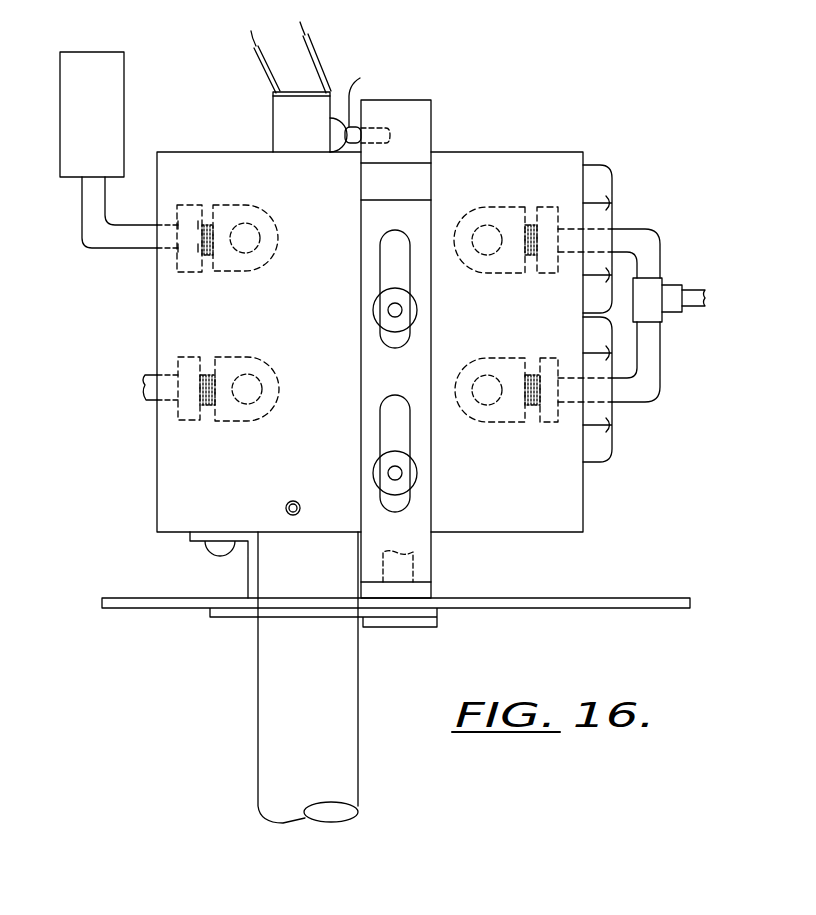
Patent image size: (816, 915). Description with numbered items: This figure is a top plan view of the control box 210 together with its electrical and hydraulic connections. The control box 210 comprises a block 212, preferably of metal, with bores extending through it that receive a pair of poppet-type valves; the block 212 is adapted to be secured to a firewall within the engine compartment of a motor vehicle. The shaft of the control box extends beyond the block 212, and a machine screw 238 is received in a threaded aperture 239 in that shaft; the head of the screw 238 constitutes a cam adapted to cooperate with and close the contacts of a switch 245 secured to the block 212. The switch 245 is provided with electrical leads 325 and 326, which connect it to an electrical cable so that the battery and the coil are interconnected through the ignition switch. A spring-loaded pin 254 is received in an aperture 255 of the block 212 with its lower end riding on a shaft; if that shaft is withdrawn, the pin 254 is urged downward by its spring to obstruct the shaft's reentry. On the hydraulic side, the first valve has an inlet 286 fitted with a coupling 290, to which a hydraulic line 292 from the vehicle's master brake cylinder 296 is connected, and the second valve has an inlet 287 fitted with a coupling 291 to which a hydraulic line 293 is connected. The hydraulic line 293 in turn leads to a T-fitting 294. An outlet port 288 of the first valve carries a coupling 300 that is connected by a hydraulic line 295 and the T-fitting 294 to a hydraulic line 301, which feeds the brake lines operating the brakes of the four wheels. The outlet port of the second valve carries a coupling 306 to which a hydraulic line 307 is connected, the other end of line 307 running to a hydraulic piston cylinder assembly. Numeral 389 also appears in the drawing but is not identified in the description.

The control box 210 is at (396, 461).
The block 212 is at (503, 502).
The master brake cylinder 296 is at (100, 97).
The hydraulic line 292 is at (152, 253).
The switch 245 is at (321, 108).
The electrical lead 325 is at (262, 70).
The electrical lead 326 is at (318, 58).
The machine screw 238 is at (361, 108).
The threaded aperture 239 is at (393, 128).
The inlet 286 is at (251, 228).
The coupling 290 is at (225, 205).
The pivot pin 389 is at (254, 382).
The coupling 306 is at (238, 358).
The hydraulic line 307 is at (148, 375).
The outlet port 288 is at (476, 213).
The coupling 300 is at (505, 207).
The inlet 287 is at (480, 380).
The coupling 291 is at (503, 358).
The hydraulic line 295 is at (622, 229).
The hydraulic line 293 is at (631, 392).
The T-fitting 294 is at (667, 312).
The hydraulic line 301 is at (695, 292).
The spring-loaded pin 254 is at (308, 482).
The aperture 255 is at (312, 514).